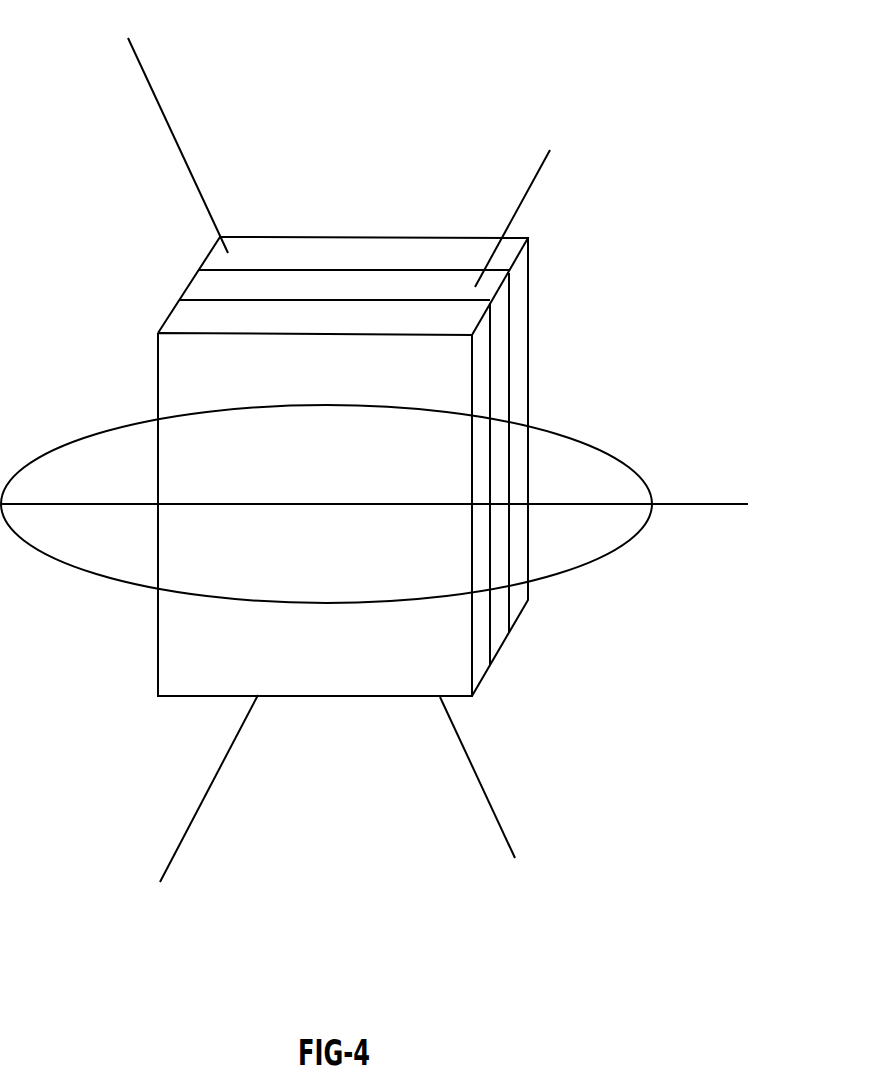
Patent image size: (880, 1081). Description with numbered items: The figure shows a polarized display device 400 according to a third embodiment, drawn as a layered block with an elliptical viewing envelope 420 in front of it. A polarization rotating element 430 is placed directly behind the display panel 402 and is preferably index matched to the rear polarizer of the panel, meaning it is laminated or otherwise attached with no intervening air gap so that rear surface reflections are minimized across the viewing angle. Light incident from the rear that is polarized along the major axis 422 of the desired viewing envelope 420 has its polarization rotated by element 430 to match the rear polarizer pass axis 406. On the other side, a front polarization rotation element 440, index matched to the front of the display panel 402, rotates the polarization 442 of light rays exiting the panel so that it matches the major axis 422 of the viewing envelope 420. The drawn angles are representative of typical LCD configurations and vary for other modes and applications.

The optical assembly 400 is at (507, 28).
The display panel 402 is at (205, 283).
The rear polarizer pass axis 406 is at (163, 113).
The desired viewing envelope 420 is at (638, 472).
The major axis 422 is at (702, 508).
The polarization rotating element 430 is at (518, 303).
The front polarization rotation element 440 is at (185, 317).
The polarization 442 is at (538, 175).